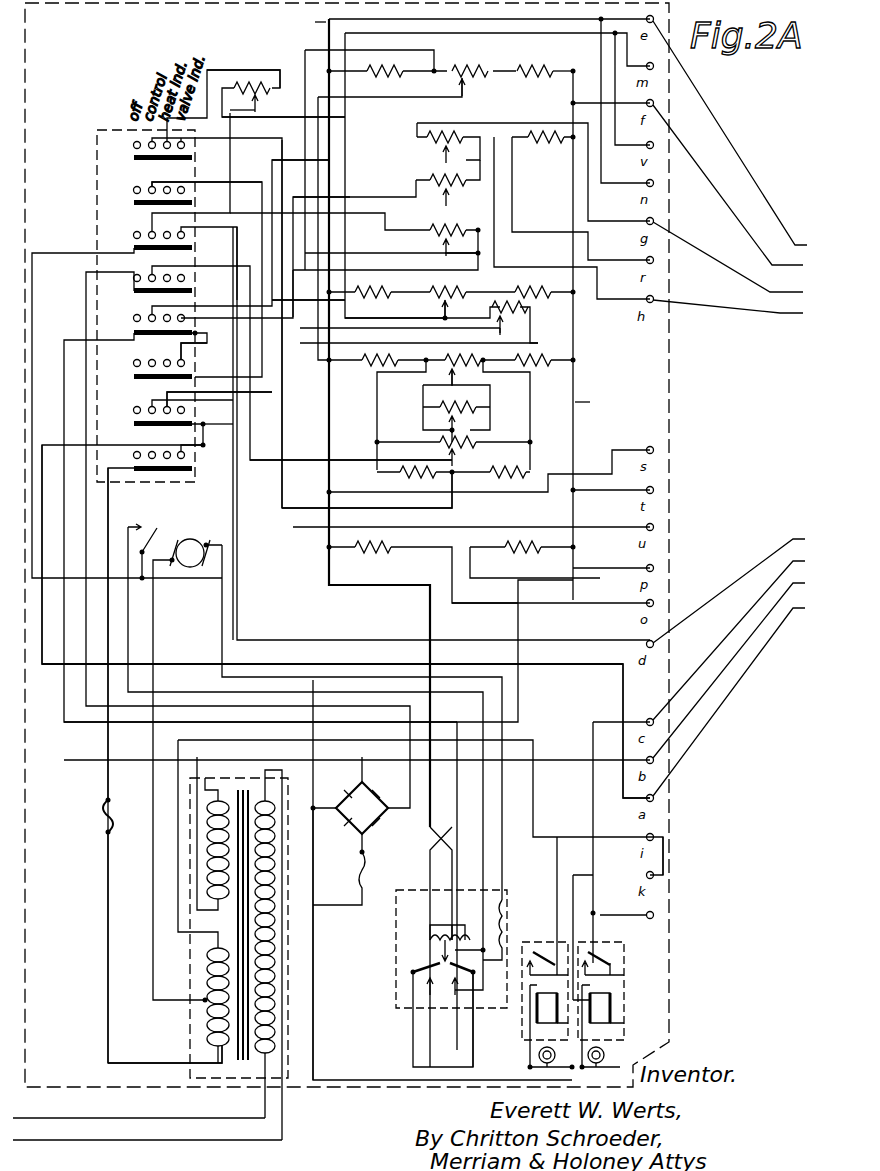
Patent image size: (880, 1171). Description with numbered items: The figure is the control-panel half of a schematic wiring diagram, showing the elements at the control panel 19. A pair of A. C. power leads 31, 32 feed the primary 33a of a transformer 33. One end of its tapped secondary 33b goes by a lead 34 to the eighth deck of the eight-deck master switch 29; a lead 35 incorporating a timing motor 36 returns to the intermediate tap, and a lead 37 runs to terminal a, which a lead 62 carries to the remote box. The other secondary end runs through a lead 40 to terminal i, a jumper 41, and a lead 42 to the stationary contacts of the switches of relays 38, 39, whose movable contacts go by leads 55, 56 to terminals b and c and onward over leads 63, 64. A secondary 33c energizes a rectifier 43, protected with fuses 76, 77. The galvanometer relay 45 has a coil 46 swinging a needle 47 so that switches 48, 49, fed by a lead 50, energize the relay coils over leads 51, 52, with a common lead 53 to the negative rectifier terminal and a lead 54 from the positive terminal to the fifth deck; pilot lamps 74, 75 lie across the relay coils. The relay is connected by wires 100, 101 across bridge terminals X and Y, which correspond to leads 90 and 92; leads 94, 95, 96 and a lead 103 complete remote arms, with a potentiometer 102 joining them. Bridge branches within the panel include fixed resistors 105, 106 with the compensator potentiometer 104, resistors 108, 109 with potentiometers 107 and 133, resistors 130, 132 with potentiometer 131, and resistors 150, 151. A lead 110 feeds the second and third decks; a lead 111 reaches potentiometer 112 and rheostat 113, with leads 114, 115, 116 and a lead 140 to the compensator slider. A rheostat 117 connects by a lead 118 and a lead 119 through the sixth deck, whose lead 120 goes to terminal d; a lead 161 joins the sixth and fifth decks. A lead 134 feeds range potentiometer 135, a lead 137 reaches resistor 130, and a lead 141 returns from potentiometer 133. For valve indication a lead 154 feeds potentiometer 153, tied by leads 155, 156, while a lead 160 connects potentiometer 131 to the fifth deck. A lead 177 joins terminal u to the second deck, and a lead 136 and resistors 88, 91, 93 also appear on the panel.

The control panel 19 is at (672, 975).
The master switch 29 is at (96, 172).
The A. C. power lead 31 is at (128, 1118).
The A. C. power lead 32 is at (140, 1140).
The transformer 33 is at (180, 1028).
The primary 33a is at (290, 982).
The tapped secondary 33b is at (215, 1042).
The secondary 33c is at (200, 870).
The lead 34 is at (106, 770).
The lead 35 is at (153, 600).
The timing motor 36 is at (195, 538).
The lead 37 is at (549, 668).
The relay 38 is at (543, 944).
The relay 39 is at (621, 957).
The lead 40 is at (533, 757).
The jumper 41 is at (668, 852).
The lead 42 is at (573, 872).
The rectifier 43 is at (345, 832).
The galvanometer relay 45 is at (386, 935).
The galvanometer relay coil 46 is at (438, 938).
The indicating needle 47 is at (435, 960).
The switch 48 is at (430, 985).
The switch 49 is at (462, 985).
The lead 50 is at (444, 846).
The lead 51 is at (413, 1035).
The lead 52 is at (473, 1052).
The common lead 53 is at (316, 1040).
The lead 54 is at (410, 760).
The lead 55 is at (555, 860).
The lead 56 is at (600, 800).
The lead 62 is at (728, 704).
The lead 63 is at (730, 650).
The lead 64 is at (740, 624).
The pilot lamp 74 is at (538, 1052).
The pilot lamp 75 is at (604, 1053).
The fuse 76 is at (103, 815).
The fuse 77 is at (366, 864).
The resistor 88 is at (548, 150).
The lead 90 is at (782, 212).
The resistor 91 is at (380, 543).
The lead 92 is at (758, 246).
The resistor 93 is at (505, 546).
The lead 94 is at (750, 283).
The lead 95 is at (772, 316).
The lead 96 is at (790, 560).
The wire 100 is at (428, 603).
The wire 101 is at (520, 625).
The potentiometer 102 is at (425, 140).
The lead 103 is at (522, 267).
The compensator potentiometer 104 is at (462, 286).
The fixed resistor 105 is at (372, 286).
The fixed resistor 106 is at (520, 290).
The potentiometer 107 is at (470, 354).
The fixed resistor 108 is at (368, 361).
The fixed resistor 109 is at (530, 365).
The lead 110 is at (318, 680).
The lead 111 is at (305, 236).
The potentiometer 112 is at (428, 172).
The rheostat 113 is at (438, 235).
The lead 114 is at (388, 180).
The lead 115 is at (355, 205).
The lead 116 is at (380, 310).
The rheostat 117 is at (450, 405).
The lead 118 is at (488, 398).
The lead 119 is at (368, 381).
The lead 120 is at (237, 583).
The fixed resistor 130 is at (393, 50).
The potentiometer 131 is at (495, 52).
The fixed resistor 132 is at (562, 63).
The potentiometer 133 is at (470, 444).
The lead 134 is at (240, 270).
The potentiometer 135 is at (525, 308).
The lead 136 is at (433, 325).
The lead 137 is at (428, 44).
The lead 140 is at (442, 317).
The lead 141 is at (360, 458).
The resistor 150 is at (400, 474).
The resistor 151 is at (508, 472).
The potentiometer 153 is at (258, 80).
The lead 154 is at (228, 200).
The lead 155 is at (455, 510).
The lead 156 is at (207, 72).
The lead 160 is at (352, 100).
The lead 161 is at (190, 348).
The lead 177 is at (287, 525).